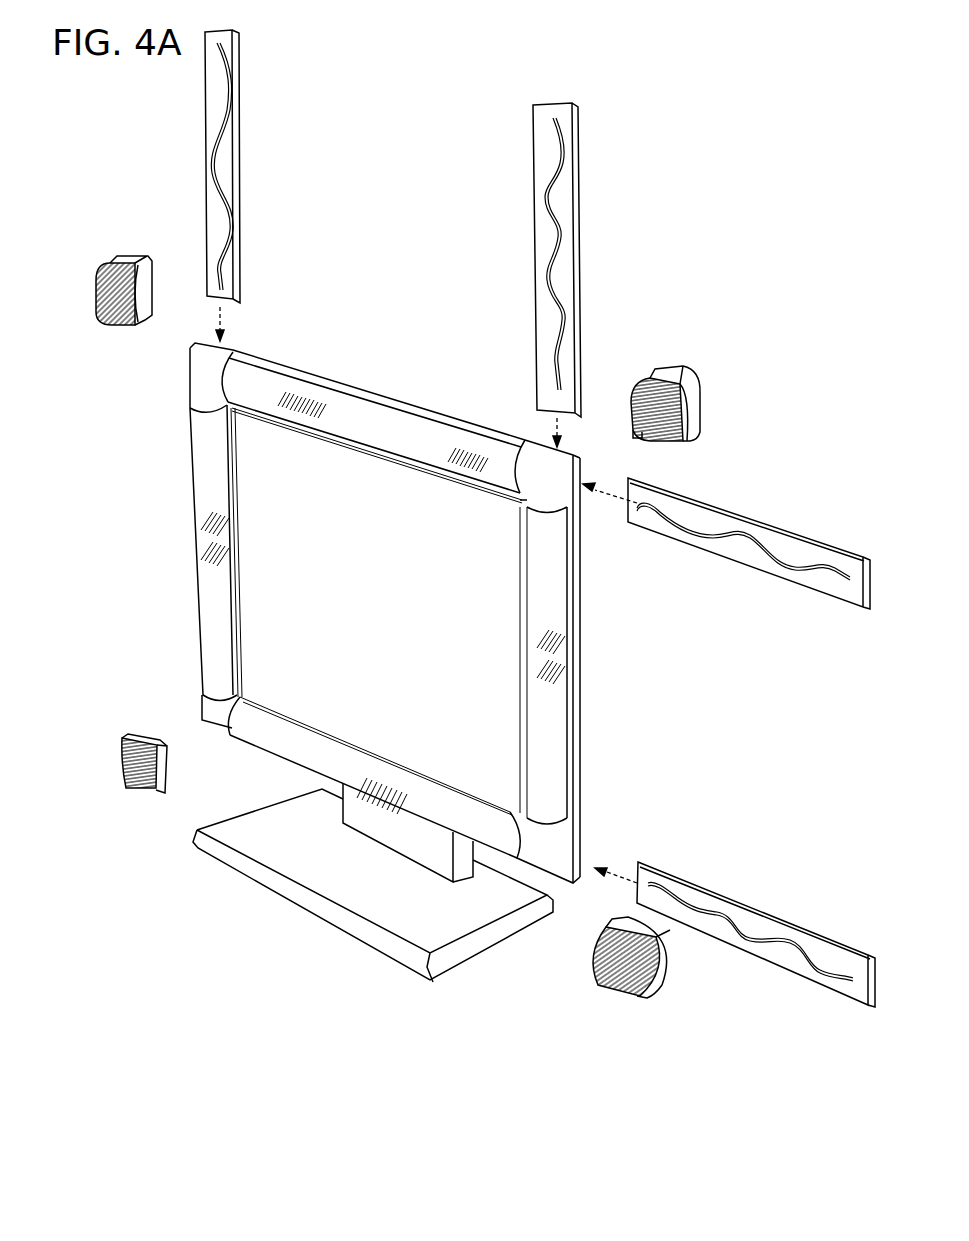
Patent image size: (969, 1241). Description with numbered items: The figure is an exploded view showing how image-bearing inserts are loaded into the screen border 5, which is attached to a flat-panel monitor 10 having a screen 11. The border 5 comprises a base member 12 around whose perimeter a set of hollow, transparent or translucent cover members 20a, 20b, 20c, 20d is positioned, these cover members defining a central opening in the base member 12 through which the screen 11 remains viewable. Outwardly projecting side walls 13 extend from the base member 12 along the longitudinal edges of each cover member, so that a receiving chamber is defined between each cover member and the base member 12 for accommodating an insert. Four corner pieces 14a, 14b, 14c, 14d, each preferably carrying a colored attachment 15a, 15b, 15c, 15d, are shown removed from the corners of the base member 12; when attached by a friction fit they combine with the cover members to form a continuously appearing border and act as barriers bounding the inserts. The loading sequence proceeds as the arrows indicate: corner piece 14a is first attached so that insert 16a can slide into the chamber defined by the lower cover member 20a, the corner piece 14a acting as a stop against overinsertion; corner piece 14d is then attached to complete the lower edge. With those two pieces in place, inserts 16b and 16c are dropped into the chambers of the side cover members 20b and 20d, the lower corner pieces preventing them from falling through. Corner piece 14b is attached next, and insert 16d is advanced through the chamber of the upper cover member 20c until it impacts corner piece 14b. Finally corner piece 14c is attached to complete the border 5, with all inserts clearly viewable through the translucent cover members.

The screen border 5 is at (336, 361).
The monitor 10 is at (587, 703).
The screen 11 is at (267, 580).
The base member 12 is at (190, 393).
The side walls 13 is at (453, 415).
The corner piece 14a is at (111, 772).
The corner piece 14b is at (115, 260).
The corner piece 14c is at (700, 384).
The corner piece 14d is at (680, 996).
The colored attachment 15a is at (128, 762).
The colored attachment 15b is at (100, 297).
The colored attachment 15c is at (683, 441).
The colored attachment 15d is at (633, 967).
The image-bearing insert 16a is at (803, 950).
The image-bearing insert 16b is at (222, 175).
The image-bearing insert 16c is at (553, 198).
The image-bearing insert 16d is at (790, 572).
The cover member 20a is at (393, 783).
The cover member 20b is at (207, 623).
The cover member 20c is at (383, 423).
The cover member 20d is at (572, 648).